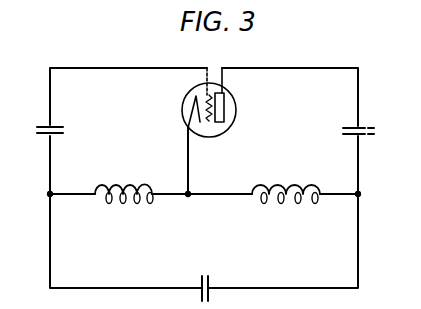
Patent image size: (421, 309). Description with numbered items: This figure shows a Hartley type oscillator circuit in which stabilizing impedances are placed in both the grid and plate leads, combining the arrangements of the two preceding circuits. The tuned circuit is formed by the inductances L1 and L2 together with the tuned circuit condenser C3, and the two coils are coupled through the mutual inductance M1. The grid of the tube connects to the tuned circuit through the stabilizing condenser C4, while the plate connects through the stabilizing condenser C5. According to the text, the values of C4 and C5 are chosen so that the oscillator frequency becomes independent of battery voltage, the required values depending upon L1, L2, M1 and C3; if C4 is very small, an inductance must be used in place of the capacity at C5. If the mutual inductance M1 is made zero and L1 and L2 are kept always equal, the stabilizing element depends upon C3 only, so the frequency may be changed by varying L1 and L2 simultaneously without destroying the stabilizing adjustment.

The stabilizing condenser in the grid lead C4 is at (62, 130).
The stabilizing condenser in the plate lead C5 is at (347, 130).
The tuned circuit condenser C3 is at (193, 278).
The plate-side tuned circuit inductance L1 is at (286, 185).
The grid-side tuned circuit inductance L2 is at (124, 184).
The mutual inductance M1 is at (148, 201).